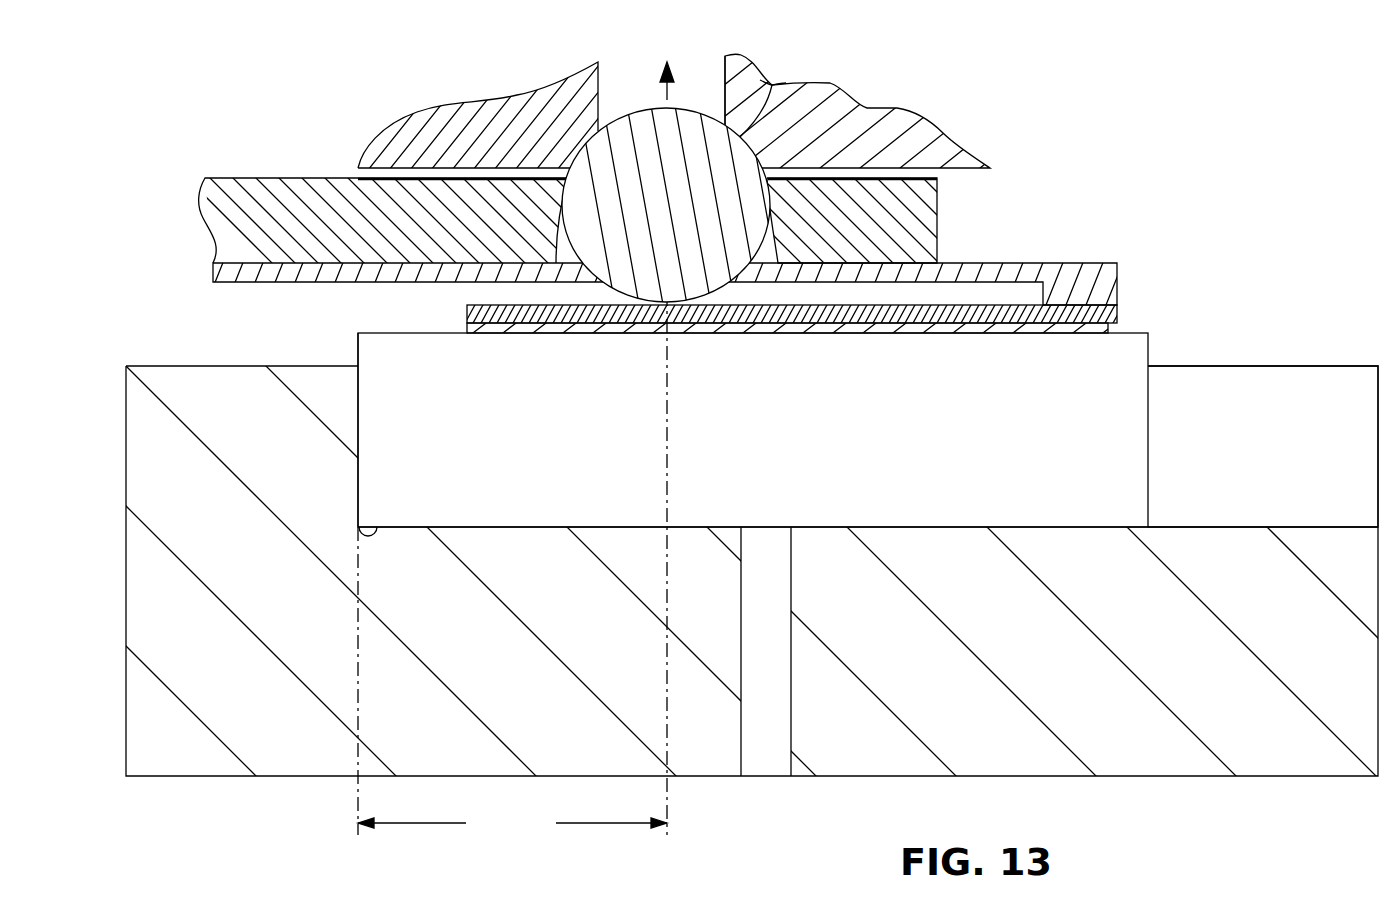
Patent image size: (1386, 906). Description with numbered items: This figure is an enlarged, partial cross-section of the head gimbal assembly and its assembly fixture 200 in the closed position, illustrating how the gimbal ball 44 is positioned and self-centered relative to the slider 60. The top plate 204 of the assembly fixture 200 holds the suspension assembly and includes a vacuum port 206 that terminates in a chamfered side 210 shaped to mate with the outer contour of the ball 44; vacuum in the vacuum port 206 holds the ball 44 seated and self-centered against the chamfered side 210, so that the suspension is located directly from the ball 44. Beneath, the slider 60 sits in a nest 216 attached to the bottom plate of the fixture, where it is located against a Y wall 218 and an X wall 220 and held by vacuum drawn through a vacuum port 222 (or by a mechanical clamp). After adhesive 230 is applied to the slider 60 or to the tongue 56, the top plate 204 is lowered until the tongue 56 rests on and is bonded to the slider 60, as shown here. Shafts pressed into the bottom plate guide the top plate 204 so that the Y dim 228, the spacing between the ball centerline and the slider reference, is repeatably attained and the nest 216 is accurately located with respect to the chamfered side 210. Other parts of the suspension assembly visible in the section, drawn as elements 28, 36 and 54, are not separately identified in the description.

The contact assembly 28 is at (337, 168).
The substrate 36 is at (903, 213).
The gimbal ball 44 is at (654, 222).
The first layer 54 is at (280, 274).
The tongue 56 is at (467, 317).
The slider 60 is at (728, 435).
The assembly fixture 200 is at (882, 107).
The top plate 204 is at (540, 110).
The vacuum port 206 is at (723, 97).
The chamfered side 210 is at (772, 85).
The nest 216 is at (1112, 757).
The Y wall 218 is at (365, 381).
The X wall 220 is at (1282, 427).
The vacuum port 222 is at (768, 757).
The Y dim 228 is at (512, 551).
The adhesive 230 is at (1117, 329).